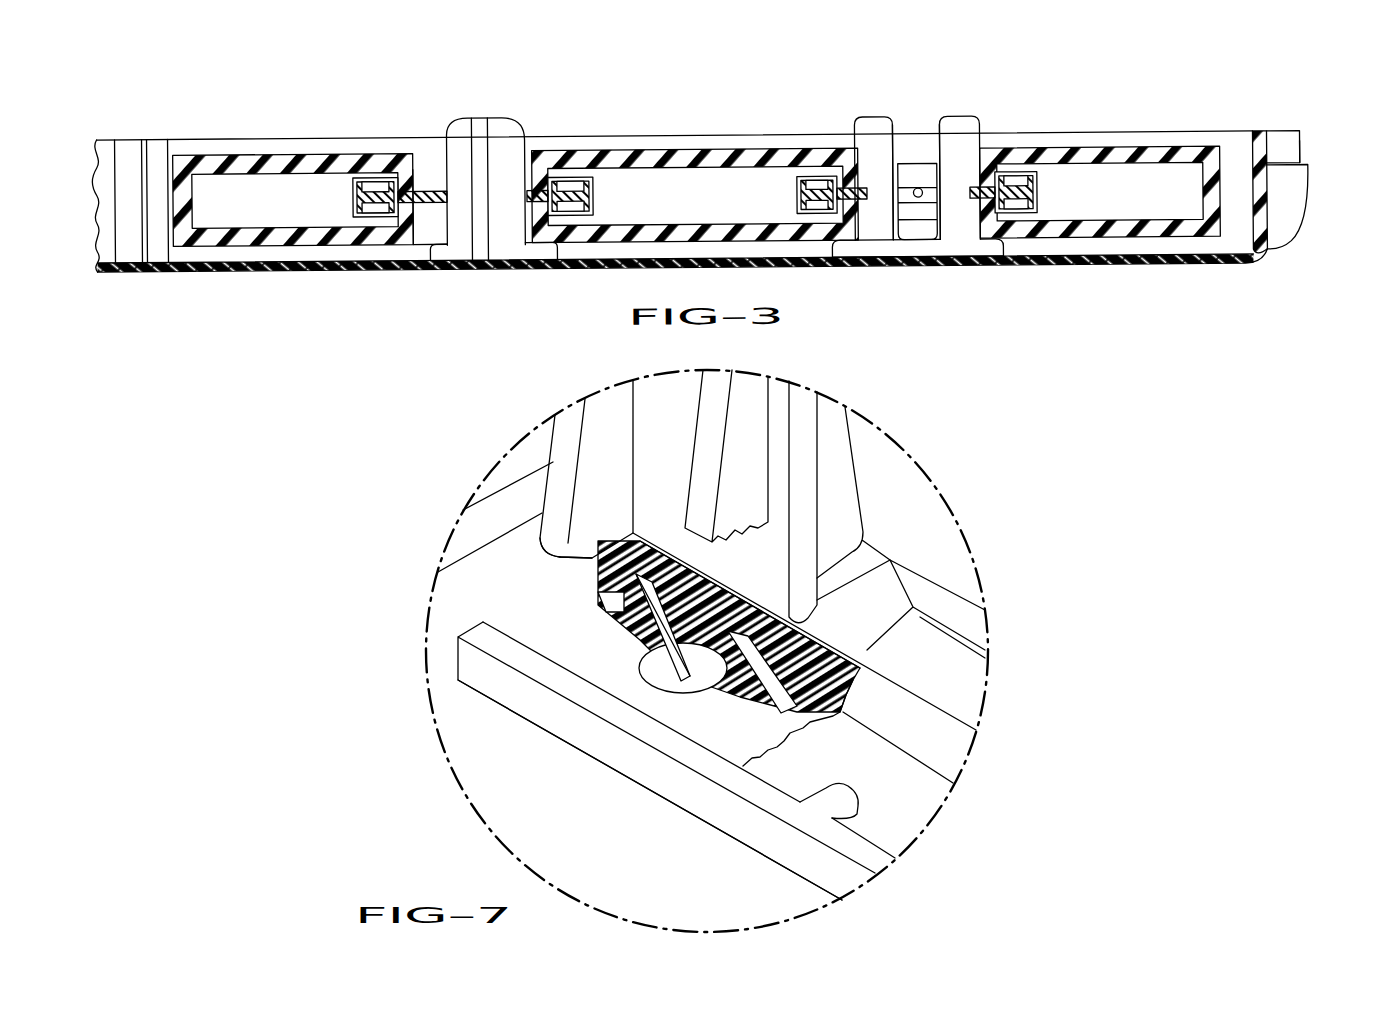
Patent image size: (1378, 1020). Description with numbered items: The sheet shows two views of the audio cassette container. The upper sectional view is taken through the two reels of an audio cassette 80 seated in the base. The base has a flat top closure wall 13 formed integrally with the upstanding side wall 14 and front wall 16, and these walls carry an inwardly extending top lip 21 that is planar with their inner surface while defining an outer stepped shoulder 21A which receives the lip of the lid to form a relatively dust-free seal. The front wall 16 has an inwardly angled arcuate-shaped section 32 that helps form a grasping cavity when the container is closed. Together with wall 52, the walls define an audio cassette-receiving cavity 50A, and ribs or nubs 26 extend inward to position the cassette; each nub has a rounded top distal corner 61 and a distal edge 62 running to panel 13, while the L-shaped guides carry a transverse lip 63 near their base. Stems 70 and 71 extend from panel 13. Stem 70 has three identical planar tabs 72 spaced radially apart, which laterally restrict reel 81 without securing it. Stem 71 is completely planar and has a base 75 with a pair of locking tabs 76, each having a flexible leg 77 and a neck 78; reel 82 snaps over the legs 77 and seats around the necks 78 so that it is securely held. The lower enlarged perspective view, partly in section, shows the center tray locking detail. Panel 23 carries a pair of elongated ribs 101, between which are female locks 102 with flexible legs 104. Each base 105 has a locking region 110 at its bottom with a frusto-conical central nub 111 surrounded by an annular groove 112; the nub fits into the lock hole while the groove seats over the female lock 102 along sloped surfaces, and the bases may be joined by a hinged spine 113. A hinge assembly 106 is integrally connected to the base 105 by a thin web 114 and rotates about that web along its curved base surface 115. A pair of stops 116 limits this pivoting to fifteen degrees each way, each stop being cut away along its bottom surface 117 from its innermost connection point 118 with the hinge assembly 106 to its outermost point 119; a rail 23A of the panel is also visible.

In FIG. 3, the top closure wall 13 is at (1073, 267).
In FIG. 3, the side wall 14 is at (235, 148).
In FIG. 3, the front wall 16 is at (1308, 196).
In FIG. 3, the top lip 21 is at (1260, 139).
In FIG. 3, the outer stepped shoulder 21A is at (1300, 172).
In FIG. 7, the panel 23 is at (740, 635).
In FIG. 7, the rail 23A is at (520, 488).
In FIG. 3, the rib 26 is at (155, 154).
In FIG. 3, the inwardly angled arcuate-shaped section 32 is at (1263, 229).
In FIG. 3, the audio cassette-receiving cavity 50A is at (1302, 149).
In FIG. 3, the wall 52 is at (142, 207).
In FIG. 3, the rounded top distal corner 61 is at (452, 125).
In FIG. 3, the distal edge 62 is at (447, 214).
In FIG. 3, the transverse lip 63 is at (447, 256).
In FIG. 3, the stem 70 is at (484, 197).
In FIG. 3, the stem 71 is at (915, 183).
In FIG. 3, the planar tab 72 is at (448, 137).
In FIG. 3, the base 75 is at (908, 253).
In FIG. 3, the locking tab 76 is at (859, 129).
In FIG. 3, the flexible leg 77 is at (950, 193).
In FIG. 3, the neck 78 is at (882, 131).
In FIG. 3, the audio cassette 80 is at (702, 155).
In FIG. 3, the reel 81 is at (350, 192).
In FIG. 3, the reel 82 is at (1043, 194).
In FIG. 7, the elongated rib 101 is at (957, 613).
In FIG. 7, the female lock 102 is at (745, 685).
In FIG. 7, the flexible leg 104 is at (673, 617).
In FIG. 7, the base 105 is at (885, 607).
In FIG. 7, the hinge assembly 106 is at (758, 496).
In FIG. 7, the locking region 110 is at (670, 674).
In FIG. 7, the central nub 111 is at (698, 677).
In FIG. 7, the annular groove 112 is at (778, 697).
In FIG. 7, the hinged spine 113 is at (935, 728).
In FIG. 7, the thin web 114 is at (750, 602).
In FIG. 7, the curved base surface 115 is at (865, 648).
In FIG. 7, the stop 116 is at (560, 453).
In FIG. 7, the bottom surface 117 is at (590, 560).
In FIG. 7, the innermost connection point 118 is at (633, 533).
In FIG. 7, the outermost point 119 is at (552, 548).